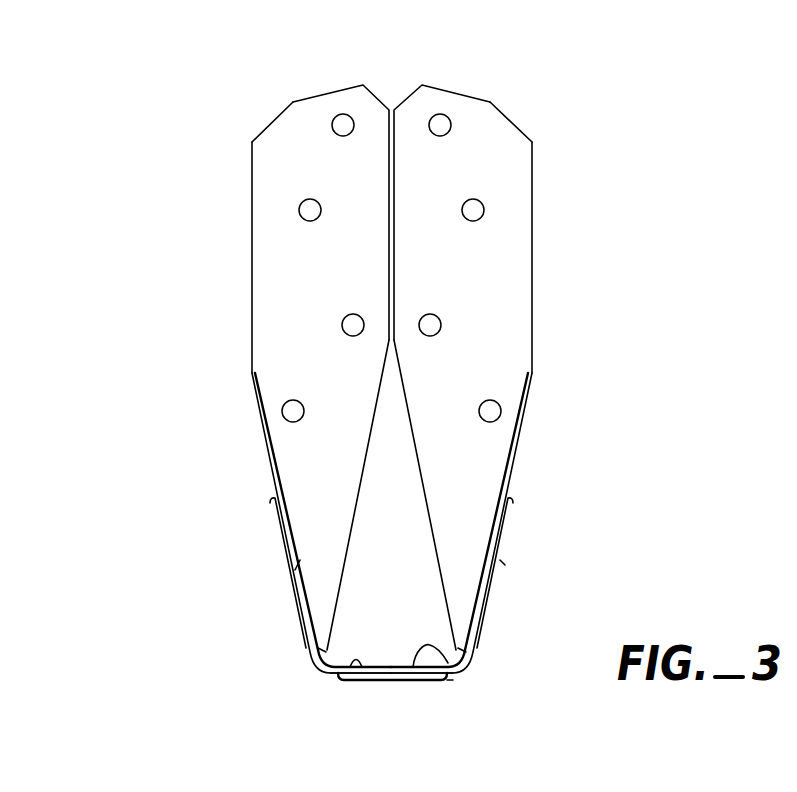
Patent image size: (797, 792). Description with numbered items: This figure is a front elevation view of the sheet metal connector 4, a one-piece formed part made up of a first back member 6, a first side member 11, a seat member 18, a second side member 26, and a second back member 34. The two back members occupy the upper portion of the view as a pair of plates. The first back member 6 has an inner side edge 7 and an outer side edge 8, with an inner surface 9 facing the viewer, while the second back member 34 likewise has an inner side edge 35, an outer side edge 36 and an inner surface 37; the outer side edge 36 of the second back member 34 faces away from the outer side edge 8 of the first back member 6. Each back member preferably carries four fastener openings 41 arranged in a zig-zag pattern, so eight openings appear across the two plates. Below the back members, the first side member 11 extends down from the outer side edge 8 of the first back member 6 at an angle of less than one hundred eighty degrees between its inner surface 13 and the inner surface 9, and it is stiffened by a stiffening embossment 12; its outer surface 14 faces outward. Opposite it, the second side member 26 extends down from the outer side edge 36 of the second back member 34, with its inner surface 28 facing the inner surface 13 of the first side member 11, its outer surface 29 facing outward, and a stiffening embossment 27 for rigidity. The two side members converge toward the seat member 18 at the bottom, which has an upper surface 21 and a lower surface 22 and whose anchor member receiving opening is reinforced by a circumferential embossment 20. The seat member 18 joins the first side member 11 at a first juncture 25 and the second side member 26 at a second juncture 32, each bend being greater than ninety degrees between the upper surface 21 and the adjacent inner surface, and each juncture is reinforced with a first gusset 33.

The sheet metal connector 4 is at (468, 84).
The first back member 6 is at (507, 117).
The inner side edge 7 is at (415, 413).
The outer side edge 8 is at (533, 273).
The inner surface 9 is at (512, 190).
The first side member 11 is at (516, 463).
The stiffening embossment 12 is at (503, 563).
The inner surface 13 is at (490, 508).
The outer surface 14 is at (525, 430).
The seat member 18 is at (331, 677).
The circumferential embossment 20 is at (444, 688).
The upper surface 21 is at (350, 670).
The lower surface 22 is at (452, 685).
The first juncture 25 is at (460, 645).
The second side member 26 is at (258, 441).
The stiffening embossment 27 is at (273, 517).
The inner surface 28 is at (300, 572).
The outer surface 29 is at (267, 473).
The second juncture 32 is at (326, 650).
The first gusset 33 is at (413, 668).
The second back member 34 is at (272, 121).
The inner side edge 35 is at (370, 430).
The outer side edge 36 is at (250, 248).
The inner surface 37 is at (268, 193).
The fastener openings 41 is at (340, 113).